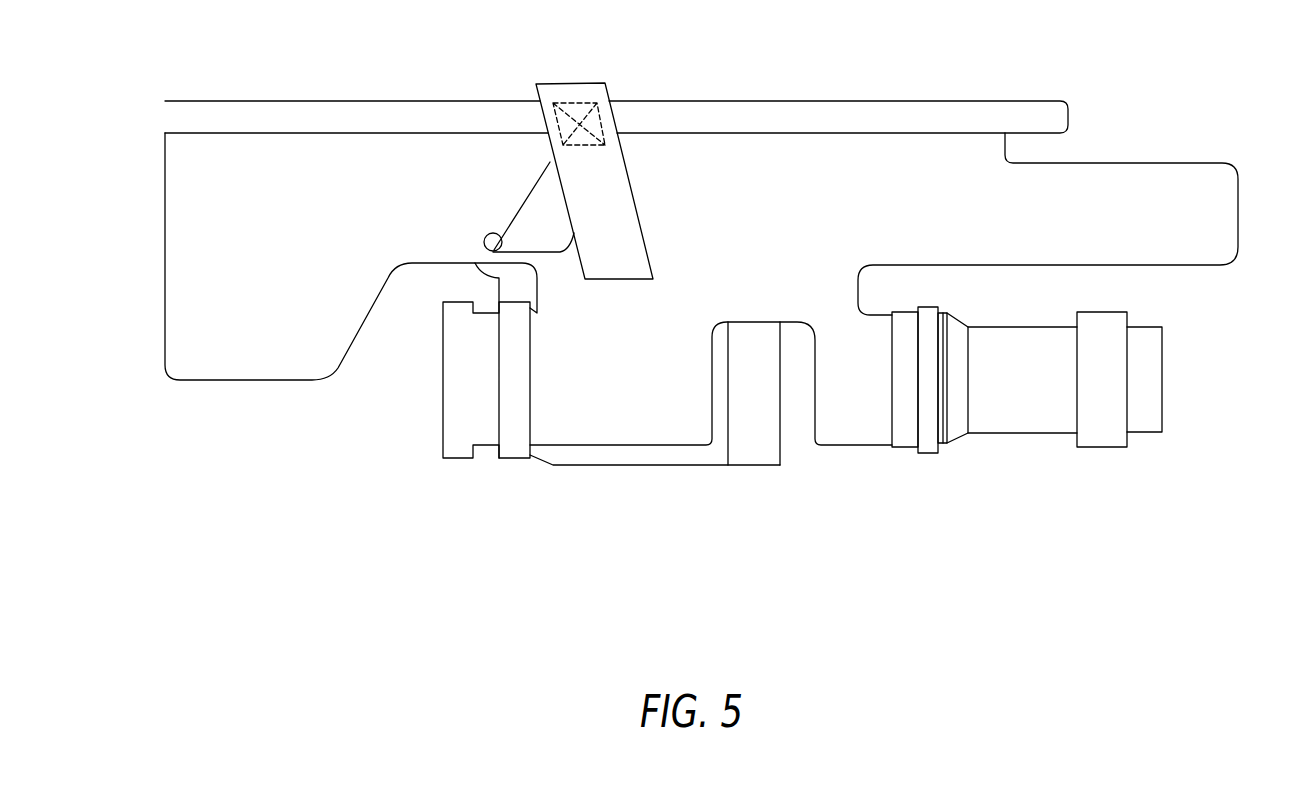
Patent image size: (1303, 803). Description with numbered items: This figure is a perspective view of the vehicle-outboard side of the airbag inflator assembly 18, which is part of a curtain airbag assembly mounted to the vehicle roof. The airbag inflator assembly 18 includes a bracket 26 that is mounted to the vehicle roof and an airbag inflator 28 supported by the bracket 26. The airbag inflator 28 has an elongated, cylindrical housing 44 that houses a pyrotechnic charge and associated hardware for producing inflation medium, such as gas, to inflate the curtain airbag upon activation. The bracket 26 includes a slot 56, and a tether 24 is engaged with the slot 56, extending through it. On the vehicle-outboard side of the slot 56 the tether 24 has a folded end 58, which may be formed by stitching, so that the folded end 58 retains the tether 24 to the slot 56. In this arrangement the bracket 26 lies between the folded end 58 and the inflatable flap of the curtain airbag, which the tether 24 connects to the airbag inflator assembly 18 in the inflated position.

The airbag inflator assembly 18 is at (981, 80).
The tether 24 is at (543, 203).
The bracket 26 is at (875, 160).
The airbag inflator 28 is at (1004, 416).
The housing 44 is at (1033, 416).
The slot 56 is at (484, 241).
The folded end 58 is at (620, 227).